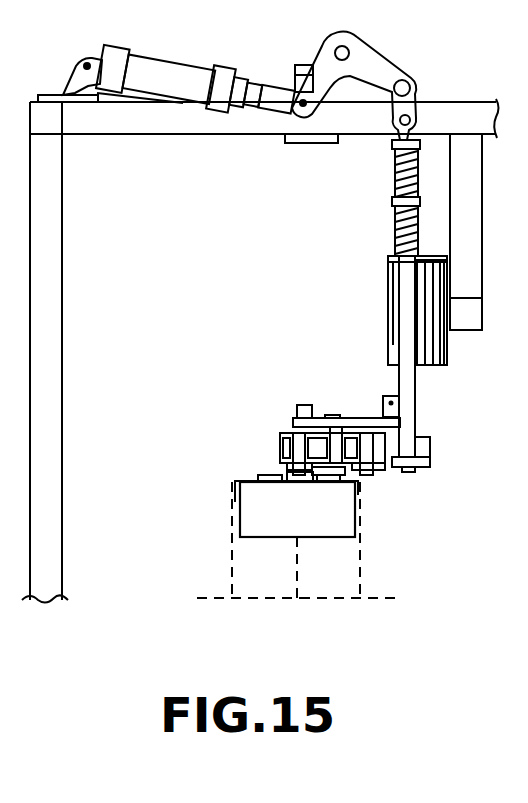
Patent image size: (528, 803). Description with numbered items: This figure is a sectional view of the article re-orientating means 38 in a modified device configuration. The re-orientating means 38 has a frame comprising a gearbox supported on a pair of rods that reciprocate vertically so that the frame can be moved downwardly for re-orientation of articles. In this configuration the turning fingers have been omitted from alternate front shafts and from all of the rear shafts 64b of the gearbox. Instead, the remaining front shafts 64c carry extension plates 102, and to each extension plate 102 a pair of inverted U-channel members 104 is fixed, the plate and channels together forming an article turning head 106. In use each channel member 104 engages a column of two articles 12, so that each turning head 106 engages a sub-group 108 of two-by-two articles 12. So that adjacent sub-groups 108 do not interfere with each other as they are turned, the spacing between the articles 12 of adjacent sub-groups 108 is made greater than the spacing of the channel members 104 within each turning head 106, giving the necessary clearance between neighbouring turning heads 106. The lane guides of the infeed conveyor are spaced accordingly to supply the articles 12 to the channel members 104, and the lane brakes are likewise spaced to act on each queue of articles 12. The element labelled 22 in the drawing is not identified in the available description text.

The article re-orientating means 38 is at (322, 299).
The front shafts 64c is at (283, 470).
The rear shafts 64b is at (362, 470).
The extension plates 102 is at (277, 476).
The inverted U-channel members 104 is at (240, 510).
The articles 12 is at (247, 570).
The article turning heads 106 is at (323, 550).
The support surface 22 is at (378, 598).
The sub-group 108 is at (256, 610).